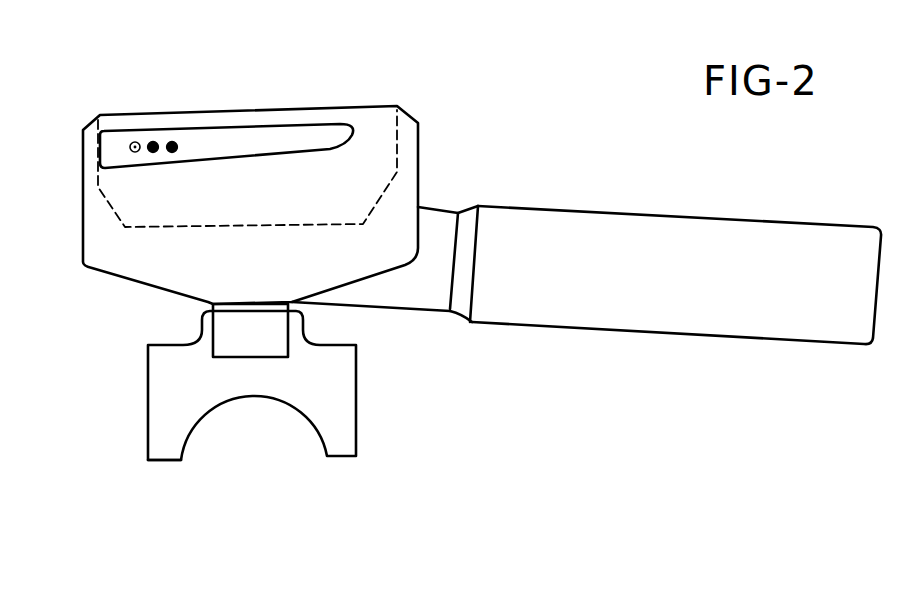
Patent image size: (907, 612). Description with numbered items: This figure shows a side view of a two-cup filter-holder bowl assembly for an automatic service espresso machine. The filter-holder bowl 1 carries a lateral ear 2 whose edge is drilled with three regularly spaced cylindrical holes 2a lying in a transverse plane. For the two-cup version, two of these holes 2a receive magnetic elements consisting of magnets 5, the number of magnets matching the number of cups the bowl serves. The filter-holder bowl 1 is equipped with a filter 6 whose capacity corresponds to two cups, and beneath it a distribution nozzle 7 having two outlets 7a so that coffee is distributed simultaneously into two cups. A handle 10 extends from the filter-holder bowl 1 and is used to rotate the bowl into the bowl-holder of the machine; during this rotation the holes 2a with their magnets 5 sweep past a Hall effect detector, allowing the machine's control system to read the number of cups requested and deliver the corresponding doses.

The filter-holder bowl 1 is at (418, 167).
The lateral ear 2 is at (255, 137).
The hole 2a is at (129, 146).
The magnet 5 is at (158, 139).
The filter 6 is at (104, 199).
The distribution nozzle 7 is at (347, 418).
The outlet 7a is at (167, 462).
The handle 10 is at (668, 222).